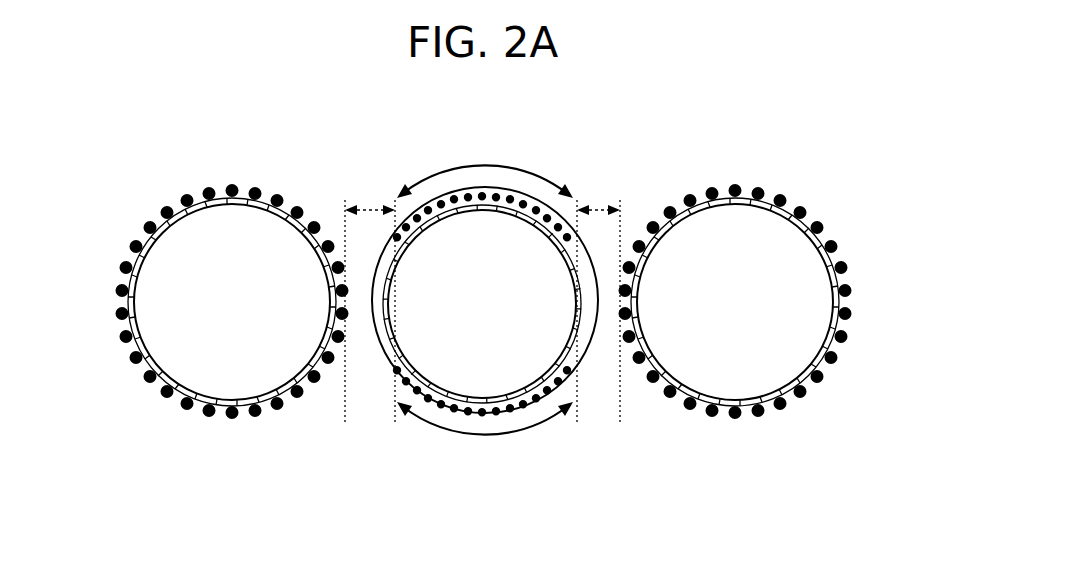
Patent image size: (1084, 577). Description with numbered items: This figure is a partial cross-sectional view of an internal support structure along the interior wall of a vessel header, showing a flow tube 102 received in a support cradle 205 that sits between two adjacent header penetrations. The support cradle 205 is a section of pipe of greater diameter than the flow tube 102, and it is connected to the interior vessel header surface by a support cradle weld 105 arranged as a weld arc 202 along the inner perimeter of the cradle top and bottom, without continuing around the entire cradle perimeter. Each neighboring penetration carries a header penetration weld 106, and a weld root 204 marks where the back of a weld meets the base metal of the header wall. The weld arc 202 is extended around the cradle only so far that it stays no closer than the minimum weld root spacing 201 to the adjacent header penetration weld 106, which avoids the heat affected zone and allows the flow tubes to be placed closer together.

The flow tube 102 is at (506, 214).
The support cradle weld 105 is at (482, 190).
The header penetration weld 106 is at (200, 197).
The weld root spacing 201 is at (373, 207).
The weld arc 202 is at (468, 166).
The weld root 204 is at (348, 316).
The support cradle 205 is at (388, 358).